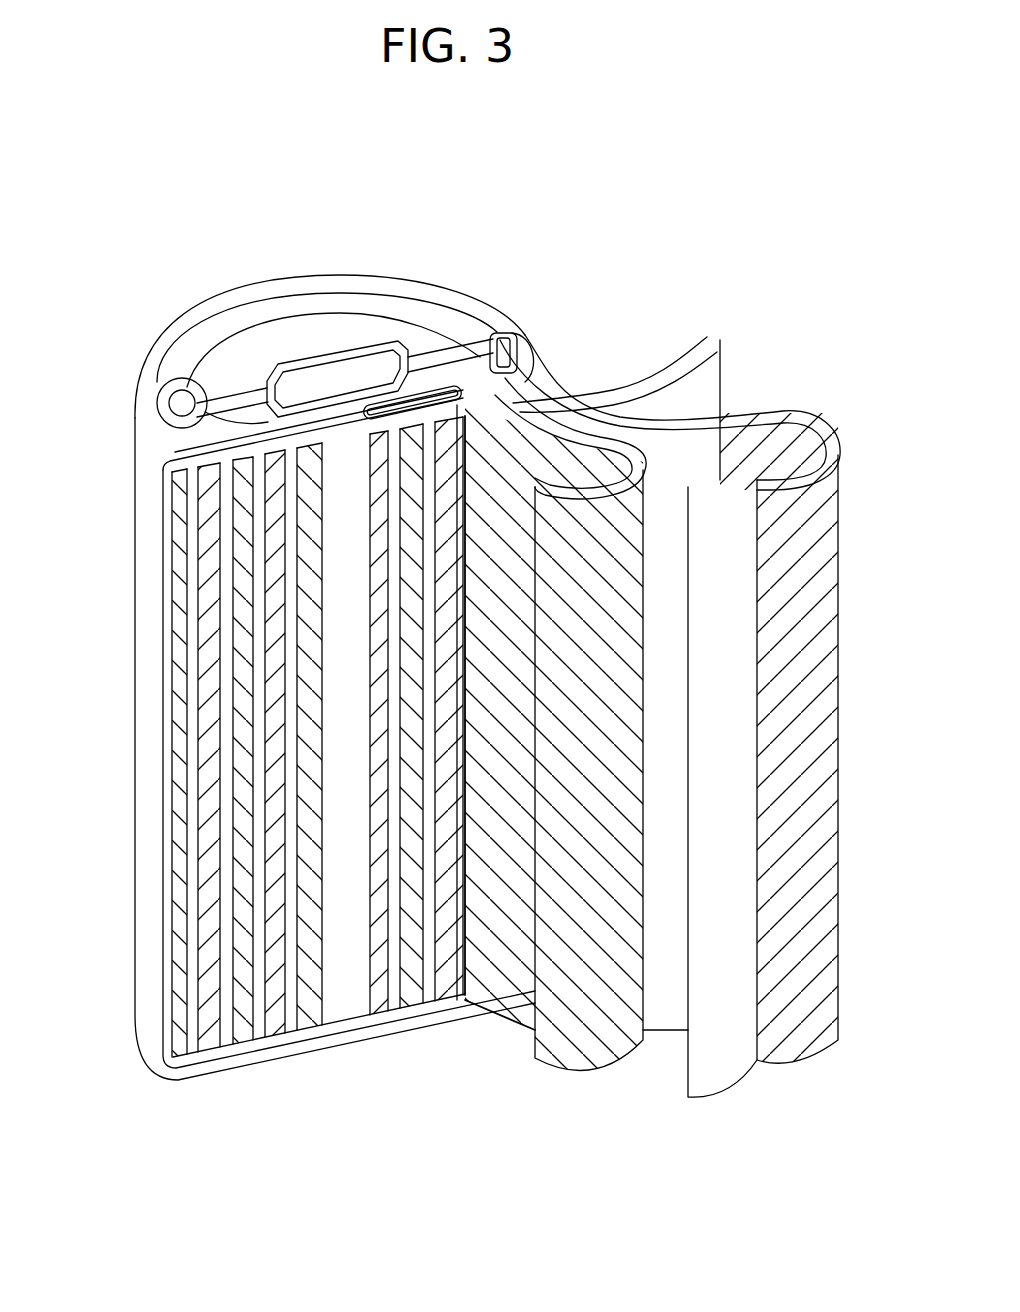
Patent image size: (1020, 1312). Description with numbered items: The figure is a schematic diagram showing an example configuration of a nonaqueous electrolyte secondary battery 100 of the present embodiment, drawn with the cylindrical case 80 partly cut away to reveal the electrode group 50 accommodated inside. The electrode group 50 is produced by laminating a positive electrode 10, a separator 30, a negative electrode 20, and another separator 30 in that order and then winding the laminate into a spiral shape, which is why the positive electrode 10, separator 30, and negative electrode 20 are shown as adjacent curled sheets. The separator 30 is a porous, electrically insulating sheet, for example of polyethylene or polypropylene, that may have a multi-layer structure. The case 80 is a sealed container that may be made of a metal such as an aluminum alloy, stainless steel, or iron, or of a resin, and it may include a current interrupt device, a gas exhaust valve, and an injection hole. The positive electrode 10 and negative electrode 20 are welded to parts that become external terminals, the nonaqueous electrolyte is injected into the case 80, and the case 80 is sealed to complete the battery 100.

The battery 100 is at (816, 243).
The case 80 is at (147, 483).
The electrode group 50 is at (850, 1160).
The positive electrode 10 is at (587, 1062).
The negative electrode 20 is at (815, 1050).
The separator 30 is at (702, 1087).